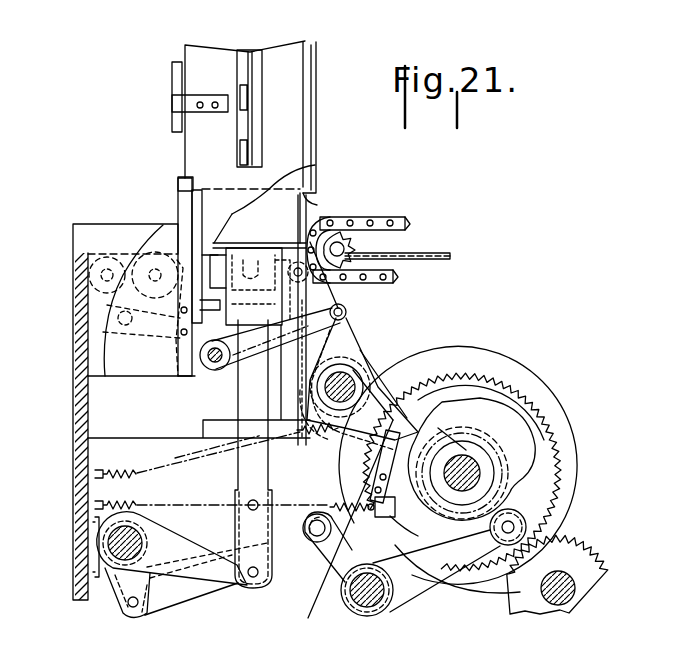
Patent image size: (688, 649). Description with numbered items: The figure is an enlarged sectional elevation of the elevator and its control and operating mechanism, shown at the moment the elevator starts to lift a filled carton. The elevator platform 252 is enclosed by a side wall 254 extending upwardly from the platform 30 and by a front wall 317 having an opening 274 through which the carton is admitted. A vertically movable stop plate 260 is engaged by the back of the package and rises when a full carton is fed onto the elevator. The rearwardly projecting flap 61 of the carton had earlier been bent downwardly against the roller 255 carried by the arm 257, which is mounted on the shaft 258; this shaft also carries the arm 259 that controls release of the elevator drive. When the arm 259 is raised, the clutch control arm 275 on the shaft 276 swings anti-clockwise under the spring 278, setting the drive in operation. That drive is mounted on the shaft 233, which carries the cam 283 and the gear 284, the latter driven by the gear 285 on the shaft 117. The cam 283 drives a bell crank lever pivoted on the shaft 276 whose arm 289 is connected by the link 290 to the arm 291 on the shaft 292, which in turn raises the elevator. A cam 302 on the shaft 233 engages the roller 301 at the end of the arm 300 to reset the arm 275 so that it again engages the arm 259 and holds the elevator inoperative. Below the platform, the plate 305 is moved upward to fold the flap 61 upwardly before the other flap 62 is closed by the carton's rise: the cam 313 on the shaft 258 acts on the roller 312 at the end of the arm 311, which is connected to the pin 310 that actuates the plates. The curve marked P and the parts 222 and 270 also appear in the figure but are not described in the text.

The side wall 254 is at (214, 58).
The front wall 317 is at (312, 108).
The path curve P is at (290, 186).
The opening 274 is at (317, 195).
The flap 62 is at (307, 206).
The elevator platform 252 is at (231, 207).
The stop plate 260 is at (177, 260).
The flap 61 is at (297, 232).
The roller 255 is at (290, 243).
The arm 257 is at (284, 300).
The chain 222 is at (385, 217).
The platform 30 is at (438, 254).
The plate 305 is at (334, 297).
The pin 310 is at (213, 367).
The arm 311 is at (253, 358).
The roller 312 is at (346, 311).
The cam 313 is at (360, 338).
The hub shaft 270 is at (326, 393).
The shaft 258 is at (328, 431).
The clutch control arm 275 is at (378, 461).
The spring 278 is at (340, 505).
The arm 259 is at (383, 415).
The gear 284 is at (533, 397).
The cam 283 is at (527, 372).
The cam 302 is at (470, 400).
The shaft 233 is at (478, 470).
The roller 301 is at (528, 524).
The gear 285 is at (590, 560).
The shaft 117 is at (577, 587).
The arm 300 is at (475, 580).
The shaft 276 is at (378, 600).
The arm 289 is at (330, 570).
The shaft 292 is at (108, 543).
The link 290 is at (187, 590).
The arm 291 is at (118, 583).